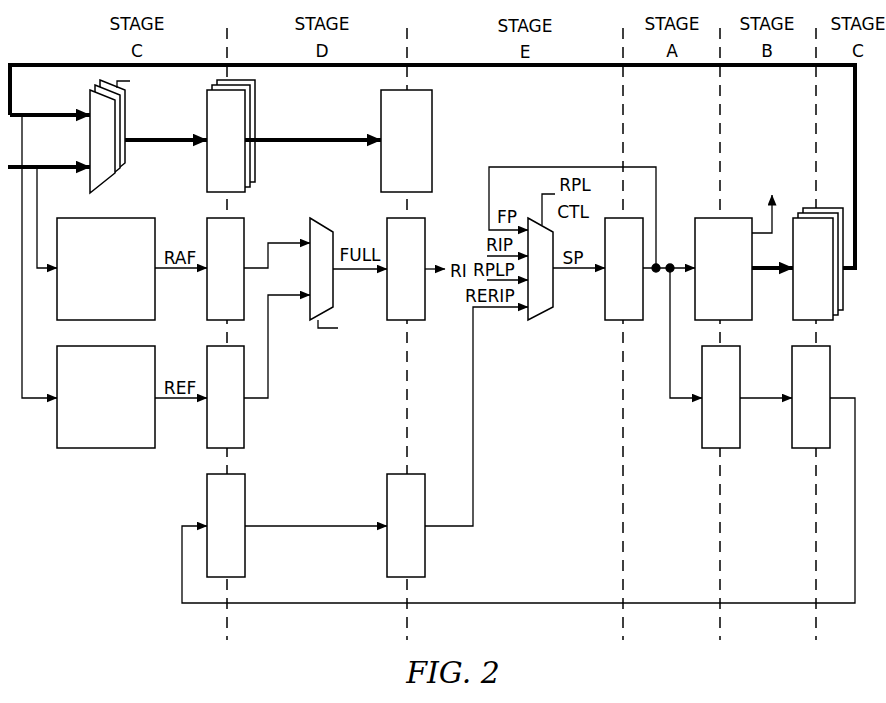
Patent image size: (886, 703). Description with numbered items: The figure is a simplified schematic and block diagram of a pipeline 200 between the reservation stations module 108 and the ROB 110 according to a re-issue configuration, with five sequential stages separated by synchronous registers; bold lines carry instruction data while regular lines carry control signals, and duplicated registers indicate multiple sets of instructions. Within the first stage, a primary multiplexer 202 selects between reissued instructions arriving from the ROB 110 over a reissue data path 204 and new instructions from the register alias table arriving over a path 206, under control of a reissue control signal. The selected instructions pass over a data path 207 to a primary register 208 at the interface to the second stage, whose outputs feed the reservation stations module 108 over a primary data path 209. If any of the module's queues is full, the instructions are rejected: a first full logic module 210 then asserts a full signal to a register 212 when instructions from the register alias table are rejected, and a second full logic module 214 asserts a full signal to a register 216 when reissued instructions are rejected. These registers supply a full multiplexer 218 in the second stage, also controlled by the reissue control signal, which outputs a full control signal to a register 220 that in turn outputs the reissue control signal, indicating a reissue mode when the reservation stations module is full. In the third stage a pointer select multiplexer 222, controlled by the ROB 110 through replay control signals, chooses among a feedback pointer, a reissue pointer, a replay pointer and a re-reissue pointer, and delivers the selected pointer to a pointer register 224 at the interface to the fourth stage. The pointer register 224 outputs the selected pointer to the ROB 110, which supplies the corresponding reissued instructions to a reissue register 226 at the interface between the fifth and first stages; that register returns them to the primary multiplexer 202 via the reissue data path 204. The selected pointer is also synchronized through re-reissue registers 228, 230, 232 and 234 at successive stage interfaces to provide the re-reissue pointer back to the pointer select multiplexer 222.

The pipeline 200 is at (468, 500).
The primary multiplexer 202 is at (130, 158).
The reissue data path 204 is at (70, 65).
The path 206 is at (58, 168).
The data path 207 is at (138, 135).
The primary register 208 is at (255, 168).
The primary data path 209 is at (280, 137).
The reservation stations module 108 is at (406, 141).
The first full logic module 210 is at (106, 269).
The register 212 is at (205, 305).
The second full logic module 214 is at (106, 397).
The register 216 is at (247, 433).
The full multiplexer 218 is at (316, 222).
The register 220 is at (395, 322).
The pointer select multiplexer 222 is at (538, 321).
The pointer register 224 is at (612, 322).
The ROB 110 is at (741, 234).
The reissue register 226 is at (843, 305).
The re-reissue register 228 is at (700, 432).
The re-reissue register 230 is at (792, 437).
The re-reissue register 232 is at (245, 552).
The re-reissue register 234 is at (425, 553).